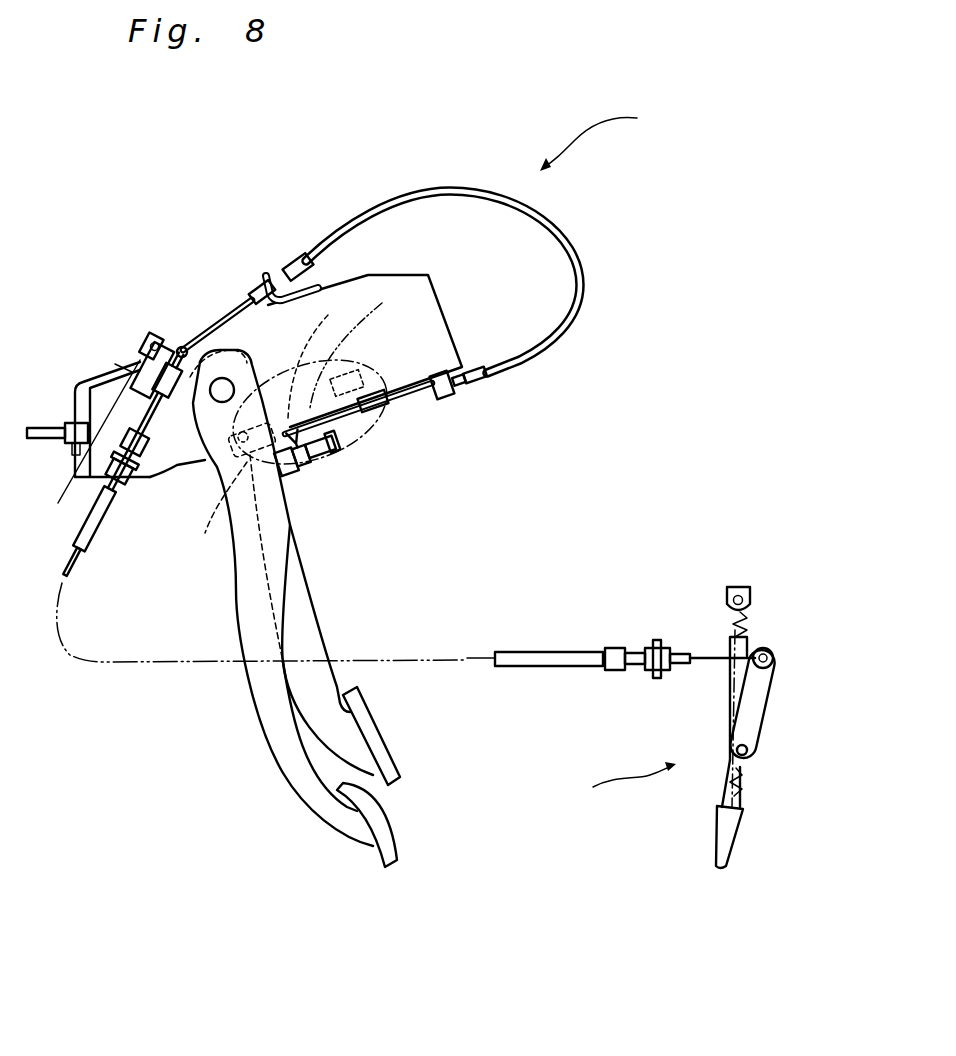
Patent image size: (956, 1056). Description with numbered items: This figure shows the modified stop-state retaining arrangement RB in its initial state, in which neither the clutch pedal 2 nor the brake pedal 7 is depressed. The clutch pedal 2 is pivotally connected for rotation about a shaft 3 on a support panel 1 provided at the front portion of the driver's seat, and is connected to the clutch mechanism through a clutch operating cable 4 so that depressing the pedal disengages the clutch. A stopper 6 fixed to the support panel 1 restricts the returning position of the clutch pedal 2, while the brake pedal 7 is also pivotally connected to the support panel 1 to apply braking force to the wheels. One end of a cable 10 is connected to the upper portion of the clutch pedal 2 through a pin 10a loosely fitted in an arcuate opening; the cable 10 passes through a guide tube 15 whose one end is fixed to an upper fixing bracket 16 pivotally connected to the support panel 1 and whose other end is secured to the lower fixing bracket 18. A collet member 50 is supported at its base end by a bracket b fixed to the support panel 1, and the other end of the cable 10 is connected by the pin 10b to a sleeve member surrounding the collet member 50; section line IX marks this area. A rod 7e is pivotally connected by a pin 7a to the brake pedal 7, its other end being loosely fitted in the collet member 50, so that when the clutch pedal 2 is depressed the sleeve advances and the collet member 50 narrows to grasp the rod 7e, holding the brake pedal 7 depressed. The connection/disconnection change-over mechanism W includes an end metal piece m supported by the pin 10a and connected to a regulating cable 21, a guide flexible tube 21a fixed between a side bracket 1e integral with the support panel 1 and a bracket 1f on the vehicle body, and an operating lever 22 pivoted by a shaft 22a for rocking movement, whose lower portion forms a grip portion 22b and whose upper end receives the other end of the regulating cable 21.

The support panel 1 is at (177, 465).
The side bracket 1e is at (145, 490).
The bracket 1f is at (657, 638).
The clutch pedal 2 is at (272, 575).
The shaft 3 is at (226, 386).
The clutch operating cable 4 is at (58, 503).
The stopper 6 is at (285, 480).
The brake pedal 7 is at (370, 723).
The pin 7a is at (234, 542).
The rod 7e is at (324, 355).
The cable 10 is at (223, 323).
The pin 10a is at (176, 340).
The pin 10b is at (357, 413).
The guide tube 15 is at (353, 227).
The upper fixing bracket 16 is at (265, 273).
The lower fixing bracket 18 is at (447, 397).
The regulating cable 21 is at (83, 397).
The guide flexible tube 21a is at (90, 540).
The operating lever 22 is at (753, 698).
The shaft 22a is at (748, 760).
The grip portion 22b is at (713, 850).
The collet member 50 is at (364, 344).
The bracket b is at (357, 377).
The end metal piece m is at (115, 364).
The section line IX is at (377, 373).
The modified stop-state retaining arrangement RB is at (611, 132).
The connection/disconnection change-over mechanism W is at (618, 783).